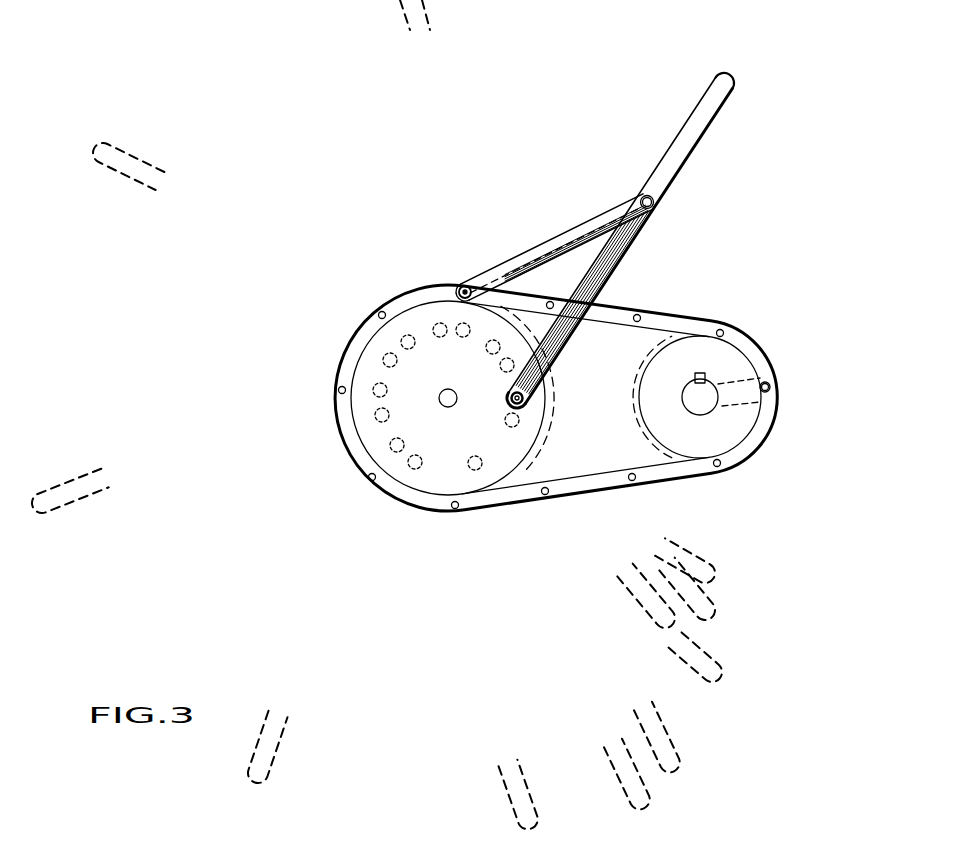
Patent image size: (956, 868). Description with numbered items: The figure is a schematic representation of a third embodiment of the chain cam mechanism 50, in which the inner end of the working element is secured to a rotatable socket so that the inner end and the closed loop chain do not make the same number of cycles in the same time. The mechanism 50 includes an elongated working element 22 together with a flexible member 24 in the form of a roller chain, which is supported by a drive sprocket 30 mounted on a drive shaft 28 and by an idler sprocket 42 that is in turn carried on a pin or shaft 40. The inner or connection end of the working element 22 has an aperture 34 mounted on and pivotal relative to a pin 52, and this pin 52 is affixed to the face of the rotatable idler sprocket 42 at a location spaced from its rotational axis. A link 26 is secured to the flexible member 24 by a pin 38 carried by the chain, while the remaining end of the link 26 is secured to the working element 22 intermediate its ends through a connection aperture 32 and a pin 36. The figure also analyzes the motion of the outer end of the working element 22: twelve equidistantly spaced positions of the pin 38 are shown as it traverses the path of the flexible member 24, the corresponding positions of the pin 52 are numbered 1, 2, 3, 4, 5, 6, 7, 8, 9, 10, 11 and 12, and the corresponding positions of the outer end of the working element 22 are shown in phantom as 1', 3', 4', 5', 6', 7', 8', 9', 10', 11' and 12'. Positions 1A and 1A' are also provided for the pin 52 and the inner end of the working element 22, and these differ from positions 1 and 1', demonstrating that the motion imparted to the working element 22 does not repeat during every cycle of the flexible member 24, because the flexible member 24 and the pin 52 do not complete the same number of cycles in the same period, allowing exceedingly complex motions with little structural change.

The chain cam mechanism 50 is at (811, 185).
The flexible member 24 is at (740, 452).
The idler sprocket 42 is at (433, 480).
The pin or shaft 40 is at (455, 405).
The drive sprocket 30 is at (738, 418).
The drive shaft 28 is at (703, 408).
The working element 22 is at (624, 247).
The link 26 is at (540, 253).
The aperture 34 is at (547, 378).
The pin 38 is at (468, 287).
The connection aperture 32 is at (655, 200).
The pin 36 is at (642, 195).
The pin 52 is at (523, 410).
The position 1 of pin 52 1 is at (499, 338).
The position 2 of pin 52 2 is at (435, 320).
The position 3 of pin 52 3 is at (381, 357).
The position 4 of pin 52 4 is at (383, 430).
The position 5 of pin 52 5 is at (420, 474).
The position 6 of pin 52 6 is at (481, 487).
The position 7 of pin 52 7 is at (555, 483).
The position 8 of pin 52 8 is at (609, 457).
The position 9 of pin 52 9 is at (642, 388).
The position 10 of pin 52 10 is at (595, 332).
The position 11 of pin 52 11 is at (532, 326).
The position 12 of pin 52 12 is at (470, 338).
The position 1a of pin 52 1A is at (411, 439).
The position 1a' of the element inner end 1A' is at (786, 377).
The position 1' of the element outer end 1' is at (570, 33).
The position 3' of the element outer end 3' is at (127, 152).
The position 4' of the element outer end 4' is at (70, 508).
The position 5' of the element outer end 5' is at (268, 765).
The position 6' of the element outer end 6' is at (519, 811).
The position 7' of the element outer end 7' is at (628, 791).
The position 8' of the element outer end 8' is at (667, 742).
The position 9' of the element outer end 9' is at (707, 672).
The position 10' of the element outer end 10' is at (706, 595).
The position 11' of the element outer end 11' is at (646, 607).
The position 12' of the element outer end 12' is at (703, 561).